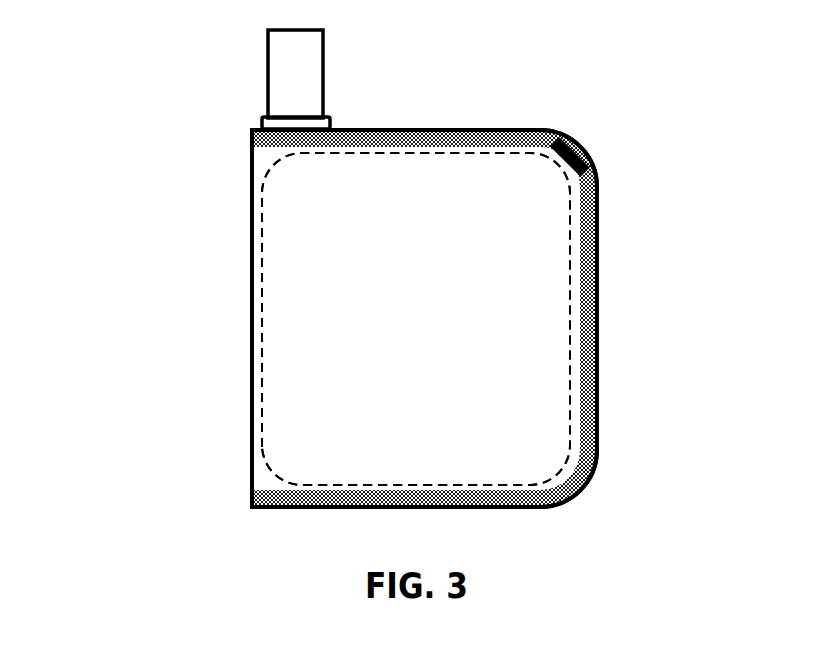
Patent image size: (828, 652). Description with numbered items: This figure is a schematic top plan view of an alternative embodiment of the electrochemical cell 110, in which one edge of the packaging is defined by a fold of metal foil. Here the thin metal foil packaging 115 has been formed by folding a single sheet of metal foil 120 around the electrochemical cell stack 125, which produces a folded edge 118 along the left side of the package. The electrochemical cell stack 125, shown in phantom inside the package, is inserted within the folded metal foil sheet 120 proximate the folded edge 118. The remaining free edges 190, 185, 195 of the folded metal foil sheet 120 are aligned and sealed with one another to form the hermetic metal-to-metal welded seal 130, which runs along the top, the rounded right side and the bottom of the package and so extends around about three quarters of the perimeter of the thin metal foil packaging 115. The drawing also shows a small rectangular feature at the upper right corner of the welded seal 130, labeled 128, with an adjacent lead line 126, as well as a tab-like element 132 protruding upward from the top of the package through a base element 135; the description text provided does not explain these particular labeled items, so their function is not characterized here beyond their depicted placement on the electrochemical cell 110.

The electrochemical cell 110 is at (136, 321).
The thin metal foil packaging 115 is at (505, 176).
The folded edge 118 is at (250, 412).
The metal foil sheet 120 is at (417, 321).
The electrochemical cell stack 125 is at (573, 412).
The upper right corner 126 is at (586, 168).
The indicator 128 is at (573, 142).
The hermetic metal-to-metal welded seal 130 is at (588, 287).
The spout 132 is at (323, 90).
The flange 135 is at (260, 123).
The free edge 185 is at (598, 445).
The free edge 190 is at (508, 508).
The free edge 195 is at (440, 128).